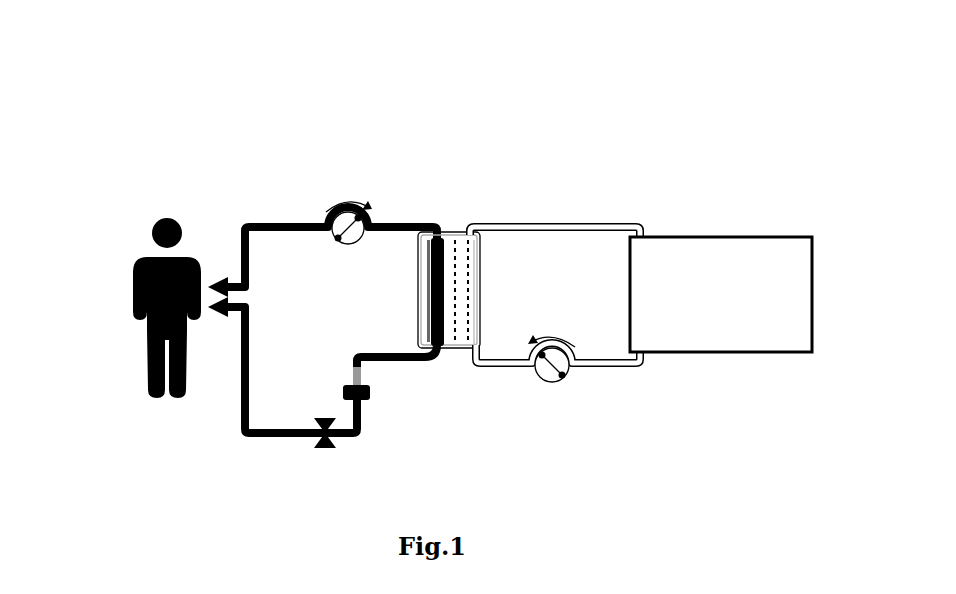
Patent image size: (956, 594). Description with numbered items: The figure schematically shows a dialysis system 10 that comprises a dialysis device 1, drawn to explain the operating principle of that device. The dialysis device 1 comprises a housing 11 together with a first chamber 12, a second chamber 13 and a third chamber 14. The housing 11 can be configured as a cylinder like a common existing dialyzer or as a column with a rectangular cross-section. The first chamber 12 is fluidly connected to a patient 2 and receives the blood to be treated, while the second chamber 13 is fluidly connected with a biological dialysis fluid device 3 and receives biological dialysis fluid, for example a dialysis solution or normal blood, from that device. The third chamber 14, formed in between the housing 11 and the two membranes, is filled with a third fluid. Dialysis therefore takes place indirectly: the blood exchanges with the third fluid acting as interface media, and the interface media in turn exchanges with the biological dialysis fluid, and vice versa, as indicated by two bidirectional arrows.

The dialysis system 10 is at (194, 156).
The dialysis device 1 is at (443, 347).
The patient 2 is at (147, 348).
The biological dialysis fluid device 3 is at (672, 324).
The housing 11 is at (481, 236).
The first chamber 12 is at (437, 242).
The second chamber 13 is at (478, 350).
The third chamber 14 is at (450, 246).